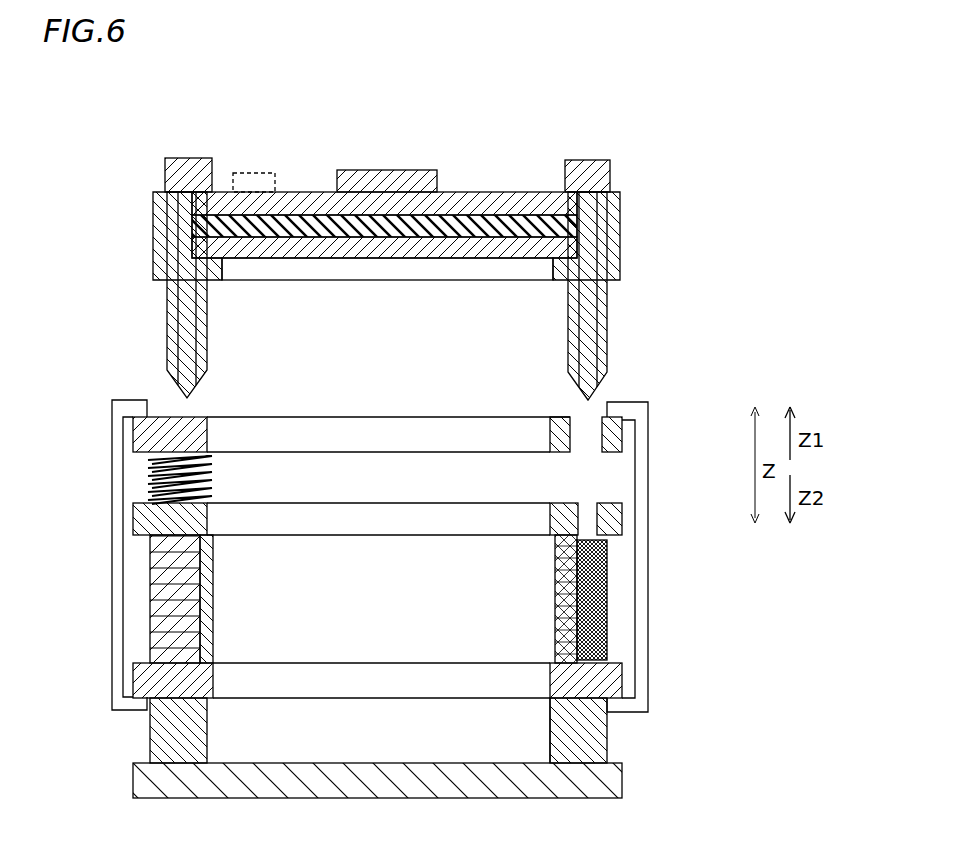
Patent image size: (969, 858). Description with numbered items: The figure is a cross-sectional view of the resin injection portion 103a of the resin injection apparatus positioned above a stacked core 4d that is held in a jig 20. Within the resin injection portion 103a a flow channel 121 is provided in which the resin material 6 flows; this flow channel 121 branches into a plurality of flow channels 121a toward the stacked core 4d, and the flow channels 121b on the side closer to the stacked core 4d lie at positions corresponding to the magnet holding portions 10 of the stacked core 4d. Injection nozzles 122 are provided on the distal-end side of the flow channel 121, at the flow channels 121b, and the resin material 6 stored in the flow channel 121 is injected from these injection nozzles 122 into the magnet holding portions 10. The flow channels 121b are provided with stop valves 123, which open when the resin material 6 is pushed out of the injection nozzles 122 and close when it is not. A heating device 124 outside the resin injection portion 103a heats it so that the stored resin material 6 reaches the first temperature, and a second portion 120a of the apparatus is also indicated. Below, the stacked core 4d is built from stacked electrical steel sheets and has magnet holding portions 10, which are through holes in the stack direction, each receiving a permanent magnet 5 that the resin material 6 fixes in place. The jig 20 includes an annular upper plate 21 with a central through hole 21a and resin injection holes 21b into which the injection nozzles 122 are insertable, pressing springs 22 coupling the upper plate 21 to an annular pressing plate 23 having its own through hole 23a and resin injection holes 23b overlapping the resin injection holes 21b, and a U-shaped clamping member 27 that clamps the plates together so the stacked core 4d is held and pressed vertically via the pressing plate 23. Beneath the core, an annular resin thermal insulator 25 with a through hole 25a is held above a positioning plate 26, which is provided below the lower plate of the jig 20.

The resin injection portion 103a is at (213, 126).
The heating device 124 is at (250, 173).
The protruding portion 120a is at (372, 172).
The flow channels 121a is at (510, 212).
The stop valves 123 is at (612, 176).
The flow channels 121b is at (600, 262).
The flow channel 121 is at (378, 250).
The resin material 6 is at (445, 260).
The jig 20 is at (372, 408).
The upper plate 21 is at (200, 416).
The through hole 21a is at (537, 417).
The resin injection holes 21b is at (565, 430).
The injection nozzles 122 is at (608, 392).
The clamping member 27 is at (648, 440).
The pressing spring 22 is at (213, 470).
The pressing plate 23 is at (210, 520).
The through hole 23a is at (555, 515).
The resin injection holes 23b is at (600, 505).
The stacked core 4d is at (215, 562).
The permanent magnet 5 is at (607, 603).
The magnet holding portion 10 is at (607, 635).
The thermal insulator 25 is at (607, 730).
The through hole 25a is at (550, 745).
The positioning plate 26 is at (622, 785).